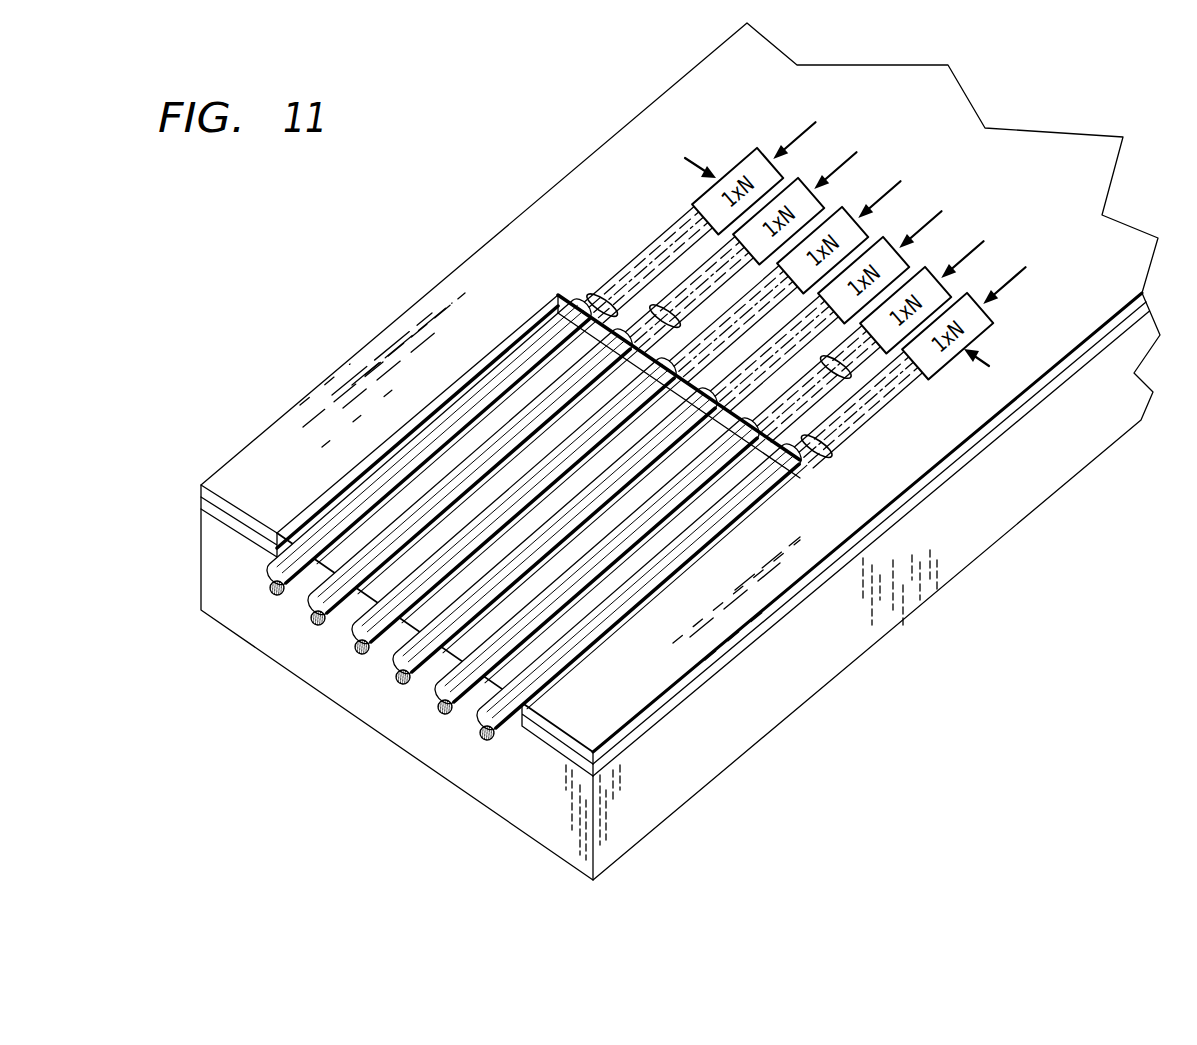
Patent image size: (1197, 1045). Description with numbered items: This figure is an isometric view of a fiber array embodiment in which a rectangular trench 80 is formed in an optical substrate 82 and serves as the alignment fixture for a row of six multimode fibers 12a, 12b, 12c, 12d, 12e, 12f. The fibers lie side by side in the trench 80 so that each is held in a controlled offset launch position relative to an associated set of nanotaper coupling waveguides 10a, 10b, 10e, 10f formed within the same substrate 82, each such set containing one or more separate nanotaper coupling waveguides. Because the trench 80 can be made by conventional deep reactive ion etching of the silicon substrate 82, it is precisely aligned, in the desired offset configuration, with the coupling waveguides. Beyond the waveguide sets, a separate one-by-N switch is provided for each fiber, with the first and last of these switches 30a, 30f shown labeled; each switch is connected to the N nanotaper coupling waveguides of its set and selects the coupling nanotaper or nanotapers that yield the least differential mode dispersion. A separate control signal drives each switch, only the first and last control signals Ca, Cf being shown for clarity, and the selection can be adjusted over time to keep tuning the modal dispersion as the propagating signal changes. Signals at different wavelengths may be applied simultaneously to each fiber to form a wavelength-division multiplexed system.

The multimode fiber 12a is at (273, 589).
The multimode fiber 12b is at (314, 619).
The multimode fiber 12c is at (358, 648).
The multimode fiber 12d is at (399, 678).
The multimode fiber 12e is at (441, 708).
The multimode fiber 12f is at (483, 734).
The rectangular trench 80 is at (347, 553).
The optical substrate 82 is at (413, 383).
The 1xN switch 30a is at (751, 154).
The 1xN switch 30f is at (965, 301).
The control signal Ca is at (687, 154).
The control signal Cf is at (991, 364).
The nanotaper coupling waveguide set 10a is at (590, 302).
The nanotaper coupling waveguide set 10b is at (648, 308).
The nanotaper coupling waveguide set 10e is at (850, 372).
The nanotaper coupling waveguide set 10f is at (830, 450).